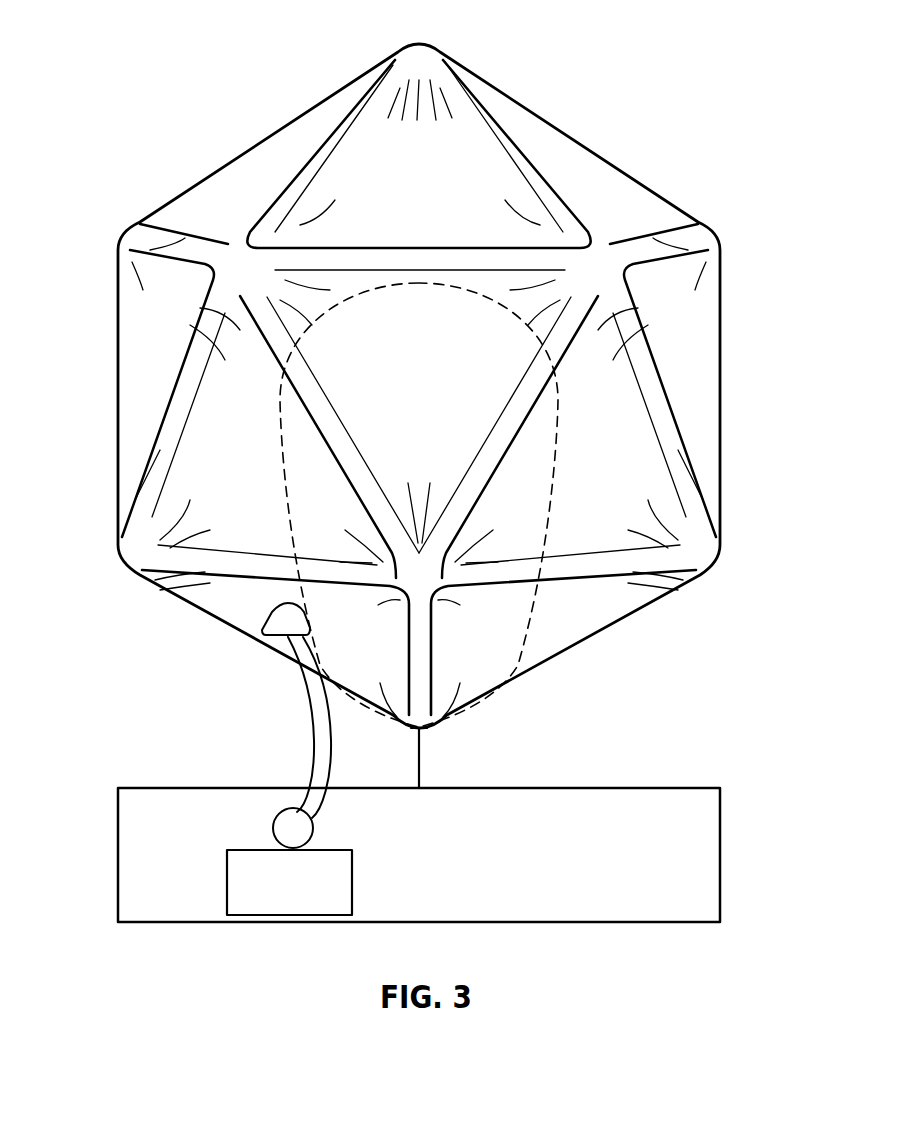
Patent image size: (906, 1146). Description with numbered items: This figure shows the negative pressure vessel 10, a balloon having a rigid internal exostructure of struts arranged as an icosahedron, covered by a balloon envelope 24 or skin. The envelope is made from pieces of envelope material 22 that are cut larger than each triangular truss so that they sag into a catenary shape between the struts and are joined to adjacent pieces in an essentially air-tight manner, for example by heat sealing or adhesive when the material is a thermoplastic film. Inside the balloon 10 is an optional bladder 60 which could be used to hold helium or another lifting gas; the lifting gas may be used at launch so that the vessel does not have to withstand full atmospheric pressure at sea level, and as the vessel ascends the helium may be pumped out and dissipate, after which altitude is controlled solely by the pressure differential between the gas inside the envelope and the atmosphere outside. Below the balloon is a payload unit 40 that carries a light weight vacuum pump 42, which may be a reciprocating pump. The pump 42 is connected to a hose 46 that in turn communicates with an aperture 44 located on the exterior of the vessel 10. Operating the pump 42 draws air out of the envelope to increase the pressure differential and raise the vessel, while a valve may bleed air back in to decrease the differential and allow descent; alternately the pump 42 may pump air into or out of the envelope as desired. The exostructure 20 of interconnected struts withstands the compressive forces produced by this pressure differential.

The negative pressure vessel 10 is at (413, 480).
The inflatable polyhedral body 20 is at (590, 182).
The envelope material 22 is at (248, 450).
The balloon envelope 24 is at (418, 175).
The bladder 60 is at (555, 485).
The base unit 40 is at (722, 855).
The vacuum pump 42 is at (272, 830).
The aperture 44 is at (278, 623).
The hose 46 is at (312, 748).